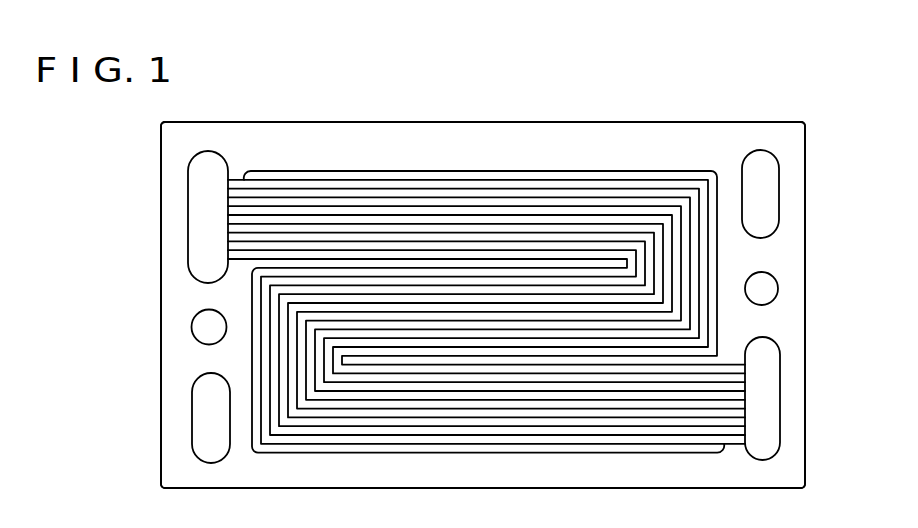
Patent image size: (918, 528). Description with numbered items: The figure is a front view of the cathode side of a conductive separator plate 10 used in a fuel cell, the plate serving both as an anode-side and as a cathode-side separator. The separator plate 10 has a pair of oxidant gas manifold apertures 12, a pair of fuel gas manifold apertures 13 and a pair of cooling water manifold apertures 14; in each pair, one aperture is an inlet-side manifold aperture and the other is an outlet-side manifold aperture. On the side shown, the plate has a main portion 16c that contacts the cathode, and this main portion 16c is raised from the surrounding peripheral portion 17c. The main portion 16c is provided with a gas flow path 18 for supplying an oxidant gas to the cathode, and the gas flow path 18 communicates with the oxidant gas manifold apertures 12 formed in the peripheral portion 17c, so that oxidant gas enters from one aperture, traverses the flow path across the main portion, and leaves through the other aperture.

The separator plate 10 is at (426, 113).
The oxidant gas manifold apertures 12 is at (210, 188).
The fuel gas manifold apertures 13 is at (213, 417).
The cooling water manifold apertures 14 is at (210, 327).
The main portion 16c is at (515, 172).
The peripheral portion 17c is at (620, 137).
The gas flow path 18 is at (312, 184).